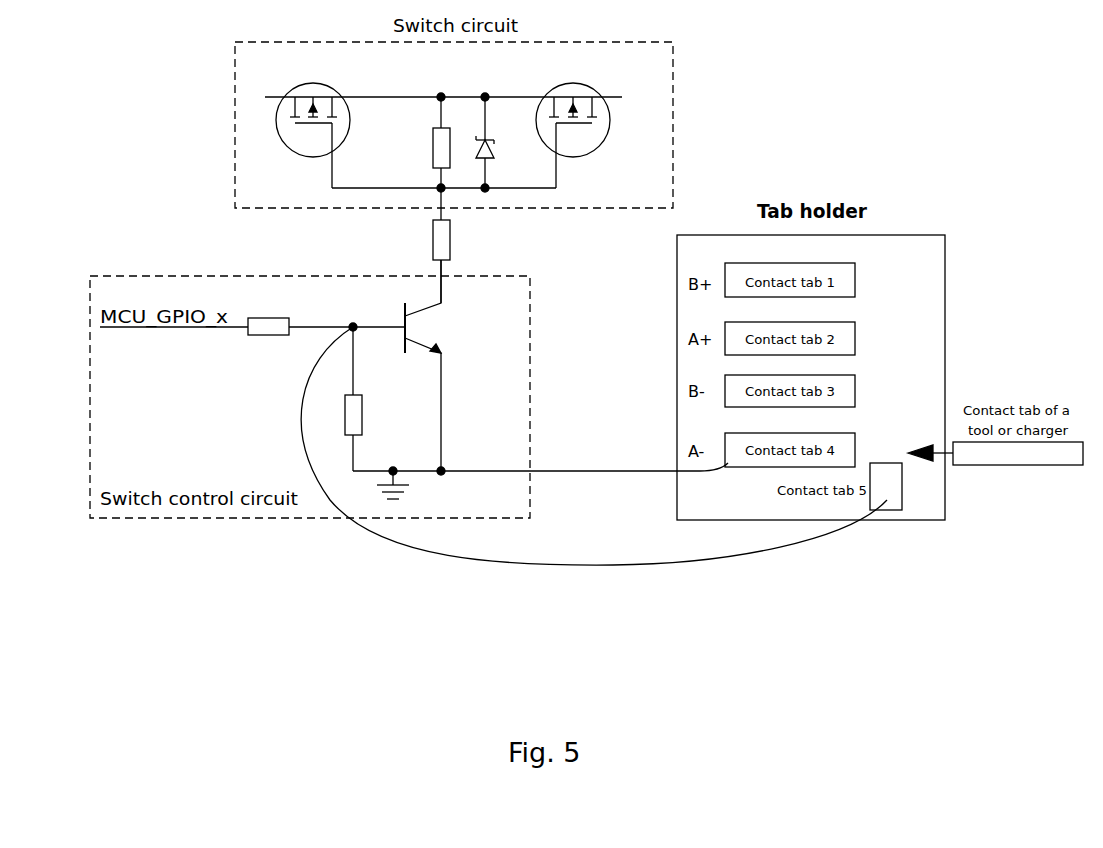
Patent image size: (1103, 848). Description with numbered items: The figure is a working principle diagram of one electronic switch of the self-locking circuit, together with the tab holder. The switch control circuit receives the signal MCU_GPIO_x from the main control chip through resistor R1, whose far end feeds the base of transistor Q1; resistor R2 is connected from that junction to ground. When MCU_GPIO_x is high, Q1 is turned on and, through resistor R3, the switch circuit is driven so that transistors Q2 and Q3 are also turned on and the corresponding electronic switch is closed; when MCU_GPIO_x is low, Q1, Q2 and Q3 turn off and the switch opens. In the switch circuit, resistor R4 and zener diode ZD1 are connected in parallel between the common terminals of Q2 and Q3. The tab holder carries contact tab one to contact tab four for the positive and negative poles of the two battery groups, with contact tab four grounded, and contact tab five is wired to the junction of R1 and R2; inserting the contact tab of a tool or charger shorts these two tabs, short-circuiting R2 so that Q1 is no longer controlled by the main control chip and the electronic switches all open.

The transistor Q1 is at (449, 365).
The switch transistor Q2 is at (313, 124).
The switch transistor Q3 is at (573, 124).
The resistor R1 is at (326, 316).
The resistor R2 is at (368, 399).
The resistor R3 is at (454, 245).
The resistor R4 is at (430, 142).
The zener diode ZD1 is at (503, 142).